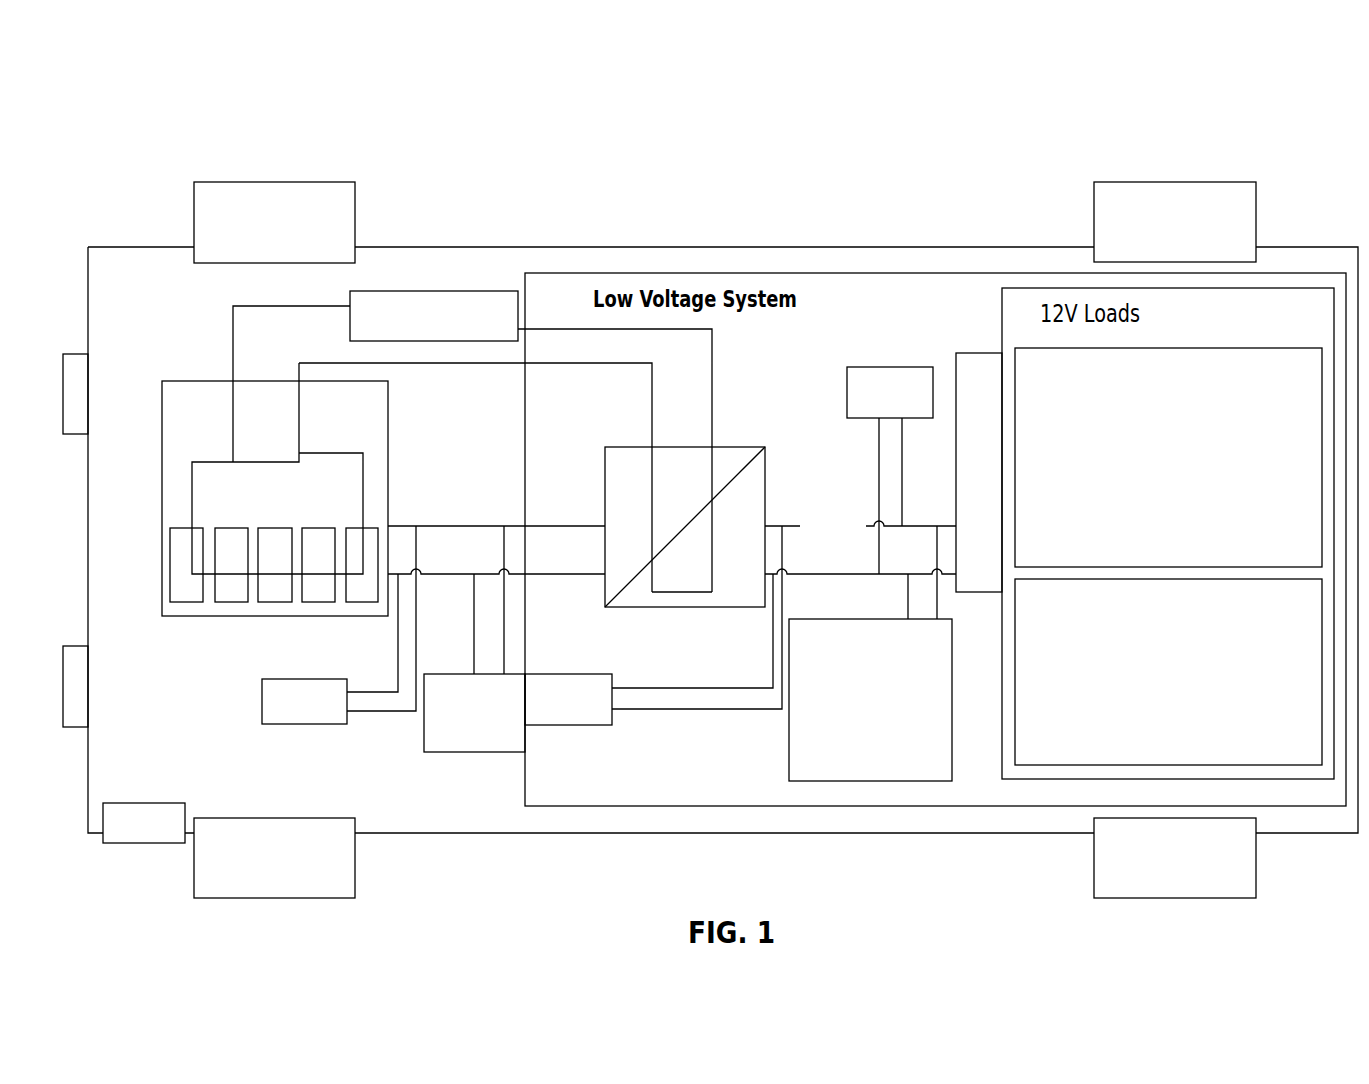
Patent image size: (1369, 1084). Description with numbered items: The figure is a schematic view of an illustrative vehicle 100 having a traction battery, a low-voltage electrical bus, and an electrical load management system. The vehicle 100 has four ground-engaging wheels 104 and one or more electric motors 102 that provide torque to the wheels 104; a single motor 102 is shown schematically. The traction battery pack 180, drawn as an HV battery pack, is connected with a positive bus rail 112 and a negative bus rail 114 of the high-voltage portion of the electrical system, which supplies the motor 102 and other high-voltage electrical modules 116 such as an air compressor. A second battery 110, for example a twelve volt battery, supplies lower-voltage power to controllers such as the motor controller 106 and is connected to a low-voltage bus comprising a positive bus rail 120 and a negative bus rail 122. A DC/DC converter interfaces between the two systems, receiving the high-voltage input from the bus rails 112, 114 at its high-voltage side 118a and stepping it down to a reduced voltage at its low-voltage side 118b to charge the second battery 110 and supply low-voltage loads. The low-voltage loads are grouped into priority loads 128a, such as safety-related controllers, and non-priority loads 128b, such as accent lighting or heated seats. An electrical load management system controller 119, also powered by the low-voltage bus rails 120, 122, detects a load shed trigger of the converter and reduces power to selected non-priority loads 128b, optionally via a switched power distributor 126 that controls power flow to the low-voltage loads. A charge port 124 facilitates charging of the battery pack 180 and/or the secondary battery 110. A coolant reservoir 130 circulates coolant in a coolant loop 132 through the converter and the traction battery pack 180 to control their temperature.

The vehicle 100 is at (136, 88).
The electric motor 102 is at (497, 753).
The ground-engaging wheel 104 is at (268, 181).
The motor controller 106 is at (592, 712).
The second battery 110 is at (893, 757).
The positive bus rail 112 is at (402, 520).
The negative bus rail 114 is at (444, 572).
The high-voltage electrical module 116 is at (328, 712).
The high-voltage side 118a is at (615, 467).
The low-voltage side 118b is at (750, 593).
The electrical load management system controller 119 is at (912, 406).
The positive bus rail 120 is at (772, 522).
The negative bus rail 122 is at (860, 580).
The charge port 124 is at (168, 833).
The switched power distributor 126 is at (980, 352).
The priority loads 128a is at (1200, 472).
The non-priority loads 128b is at (1200, 684).
The coolant reservoir 130 is at (458, 329).
The coolant loop 132 is at (440, 364).
The HV battery pack 180 is at (368, 419).